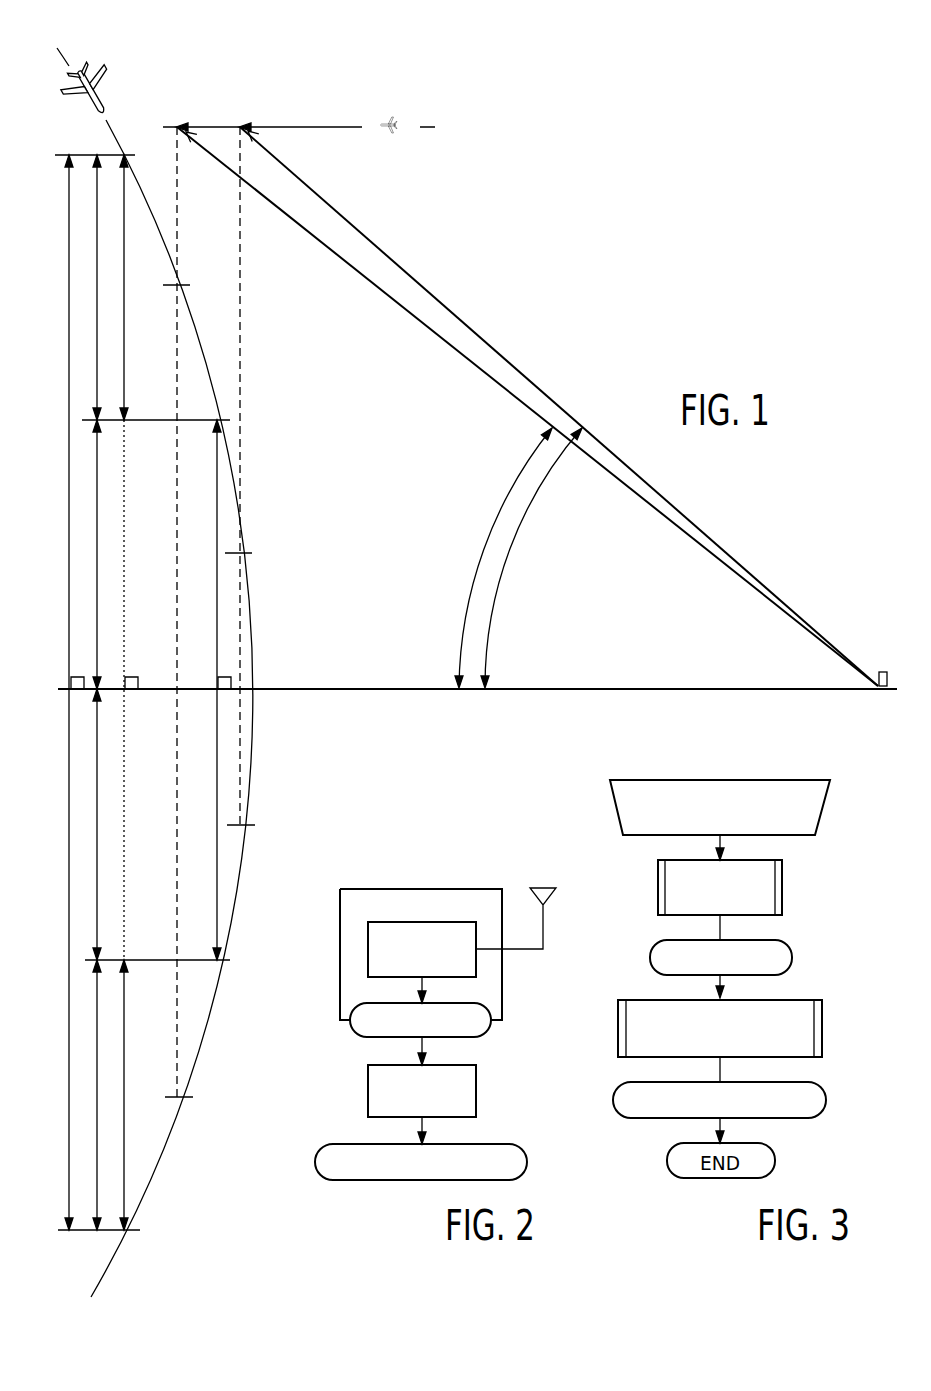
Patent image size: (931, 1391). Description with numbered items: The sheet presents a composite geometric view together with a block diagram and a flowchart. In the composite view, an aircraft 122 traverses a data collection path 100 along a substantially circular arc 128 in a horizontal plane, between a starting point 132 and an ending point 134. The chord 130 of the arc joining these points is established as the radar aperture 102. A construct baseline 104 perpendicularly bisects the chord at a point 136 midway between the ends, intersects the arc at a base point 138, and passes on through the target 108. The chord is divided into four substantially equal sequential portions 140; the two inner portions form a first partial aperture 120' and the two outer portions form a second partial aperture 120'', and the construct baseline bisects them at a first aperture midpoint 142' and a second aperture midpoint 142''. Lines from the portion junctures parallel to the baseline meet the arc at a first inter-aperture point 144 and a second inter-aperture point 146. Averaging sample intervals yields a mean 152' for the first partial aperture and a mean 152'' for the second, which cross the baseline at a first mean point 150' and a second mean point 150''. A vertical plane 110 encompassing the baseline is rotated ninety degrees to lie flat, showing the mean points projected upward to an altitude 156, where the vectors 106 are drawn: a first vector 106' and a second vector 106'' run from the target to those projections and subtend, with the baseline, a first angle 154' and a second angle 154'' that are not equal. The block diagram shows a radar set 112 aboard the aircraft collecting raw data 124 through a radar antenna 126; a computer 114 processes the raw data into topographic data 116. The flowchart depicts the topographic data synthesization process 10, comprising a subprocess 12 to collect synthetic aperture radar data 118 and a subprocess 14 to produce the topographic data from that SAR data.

In FIG. 3, the topographic data synthesization process 10 is at (868, 1165).
In FIG. 3, the subprocess to collect synthetic aperture radar data 12 is at (785, 893).
In FIG. 3, the subprocess to produce topographic data 14 is at (825, 1032).
In FIG. 1, the data collection path 100 is at (68, 50).
In FIG. 1, the radar aperture 102 is at (69, 197).
In FIG. 1, the construct baseline 104 is at (350, 687).
In FIG. 1, the vectors 106 is at (550, 366).
In FIG. 1, the first vector 106' is at (559, 406).
In FIG. 1, the second vector 106'' is at (527, 406).
In FIG. 1, the target 108 is at (885, 672).
In FIG. 1, the vertical plane 110 is at (352, 490).
In FIG. 2, the radar set 112 is at (478, 965).
In FIG. 2, the computer 114 is at (478, 1097).
In FIG. 2, the topographic data 116 is at (527, 1165).
In FIG. 3, the topographic data 116 is at (828, 1100).
In FIG. 3, the synthetic aperture radar data 118 is at (795, 956).
In FIG. 1, the first partial aperture 120' is at (253, 690).
In FIG. 1, the second partial aperture 120'' is at (146, 692).
In FIG. 1, the aircraft 122 is at (106, 70).
In FIG. 2, the aircraft 122 is at (462, 889).
In FIG. 2, the raw data 124 is at (490, 1030).
In FIG. 2, the radar antenna 126 is at (548, 888).
In FIG. 1, the arc 128 is at (193, 330).
In FIG. 1, the chord 130 is at (69, 250).
In FIG. 1, the starting point 132 is at (159, 113).
In FIG. 1, the ending point 134 is at (128, 1232).
In FIG. 1, the point 136 is at (70, 687).
In FIG. 1, the base point 138 is at (250, 687).
In FIG. 1, the sequential portions 140 is at (97, 327).
In FIG. 1, the first aperture midpoint 142' is at (207, 704).
In FIG. 1, the second aperture midpoint 142'' is at (146, 704).
In FIG. 1, the first inter-aperture point 144 is at (217, 418).
In FIG. 1, the second inter-aperture point 146 is at (218, 962).
In FIG. 1, the first mean point 150' is at (268, 406).
In FIG. 1, the second mean point 150'' is at (181, 382).
In FIG. 1, the mean for first partial aperture 152' is at (240, 476).
In FIG. 1, the mean for second partial aperture 152'' is at (234, 612).
In FIG. 1, the first angle 154' is at (531, 558).
In FIG. 1, the second angle 154'' is at (486, 558).
In FIG. 1, the altitude 156 is at (335, 129).